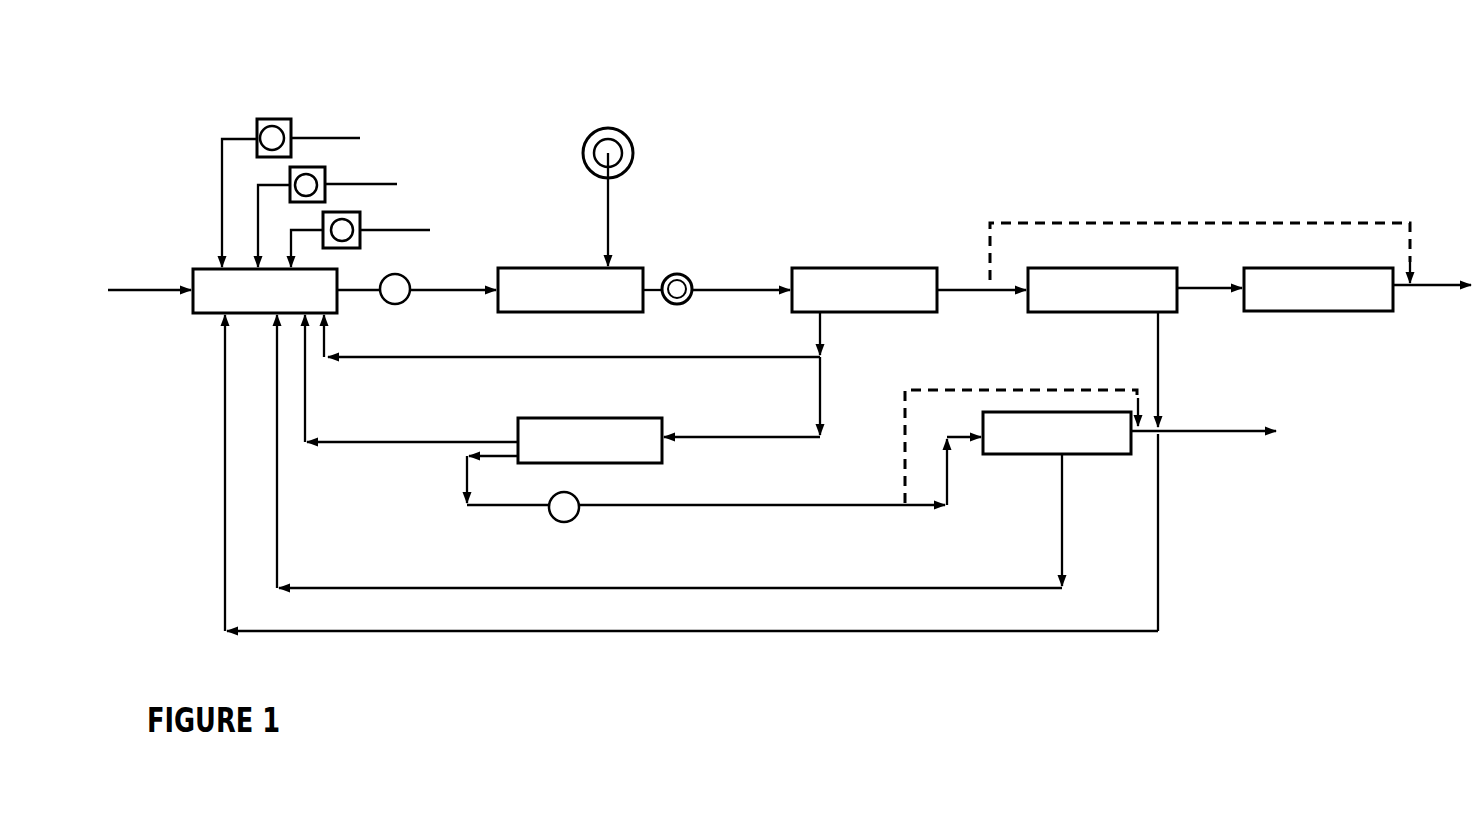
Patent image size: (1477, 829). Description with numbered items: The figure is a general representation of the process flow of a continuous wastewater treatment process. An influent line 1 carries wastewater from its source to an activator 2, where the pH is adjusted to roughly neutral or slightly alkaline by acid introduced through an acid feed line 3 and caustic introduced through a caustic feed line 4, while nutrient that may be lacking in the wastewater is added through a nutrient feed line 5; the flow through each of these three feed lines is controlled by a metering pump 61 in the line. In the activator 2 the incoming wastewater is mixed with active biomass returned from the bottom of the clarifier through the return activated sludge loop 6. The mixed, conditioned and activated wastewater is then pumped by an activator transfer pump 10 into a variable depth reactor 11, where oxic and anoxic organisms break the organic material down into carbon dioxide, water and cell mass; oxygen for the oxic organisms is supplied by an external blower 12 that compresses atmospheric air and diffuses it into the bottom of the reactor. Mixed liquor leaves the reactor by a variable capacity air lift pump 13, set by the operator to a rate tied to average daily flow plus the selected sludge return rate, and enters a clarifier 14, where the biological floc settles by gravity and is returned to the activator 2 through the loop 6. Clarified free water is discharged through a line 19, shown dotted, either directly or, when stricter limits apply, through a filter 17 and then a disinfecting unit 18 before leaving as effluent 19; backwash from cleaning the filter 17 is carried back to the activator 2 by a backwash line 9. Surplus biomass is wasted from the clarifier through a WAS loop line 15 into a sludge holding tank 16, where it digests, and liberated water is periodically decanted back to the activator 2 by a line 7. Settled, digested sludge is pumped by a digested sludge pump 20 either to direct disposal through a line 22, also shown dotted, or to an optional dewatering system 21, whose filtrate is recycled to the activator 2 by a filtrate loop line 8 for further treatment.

The influent line 1 is at (123, 292).
The activator 2 is at (207, 287).
The acid feed line 3 is at (219, 140).
The caustic feed line 4 is at (281, 185).
The nutrient feed line 5 is at (298, 232).
The metering pump 61 is at (292, 130).
The return activated sludge loop 6 is at (732, 361).
The decant line 7 is at (442, 446).
The filtrate loop line 8 is at (885, 581).
The backwash line 9 is at (1164, 335).
The activator transfer pump 10 is at (393, 306).
The variable depth reactor 11 is at (617, 288).
The blower 12 is at (588, 136).
The variable capacity air lift pump 13 is at (696, 281).
The clarifier 14 is at (851, 292).
The WAS loop line 15 is at (828, 381).
The sludge holding tank 16 is at (551, 436).
The filter 17 is at (1072, 282).
The disinfecting unit 18 is at (1284, 286).
The effluent line 19 is at (971, 295).
The digested sludge pump 20 is at (563, 524).
The dewatering system 21 is at (1109, 450).
The disposal line 22 is at (1211, 441).